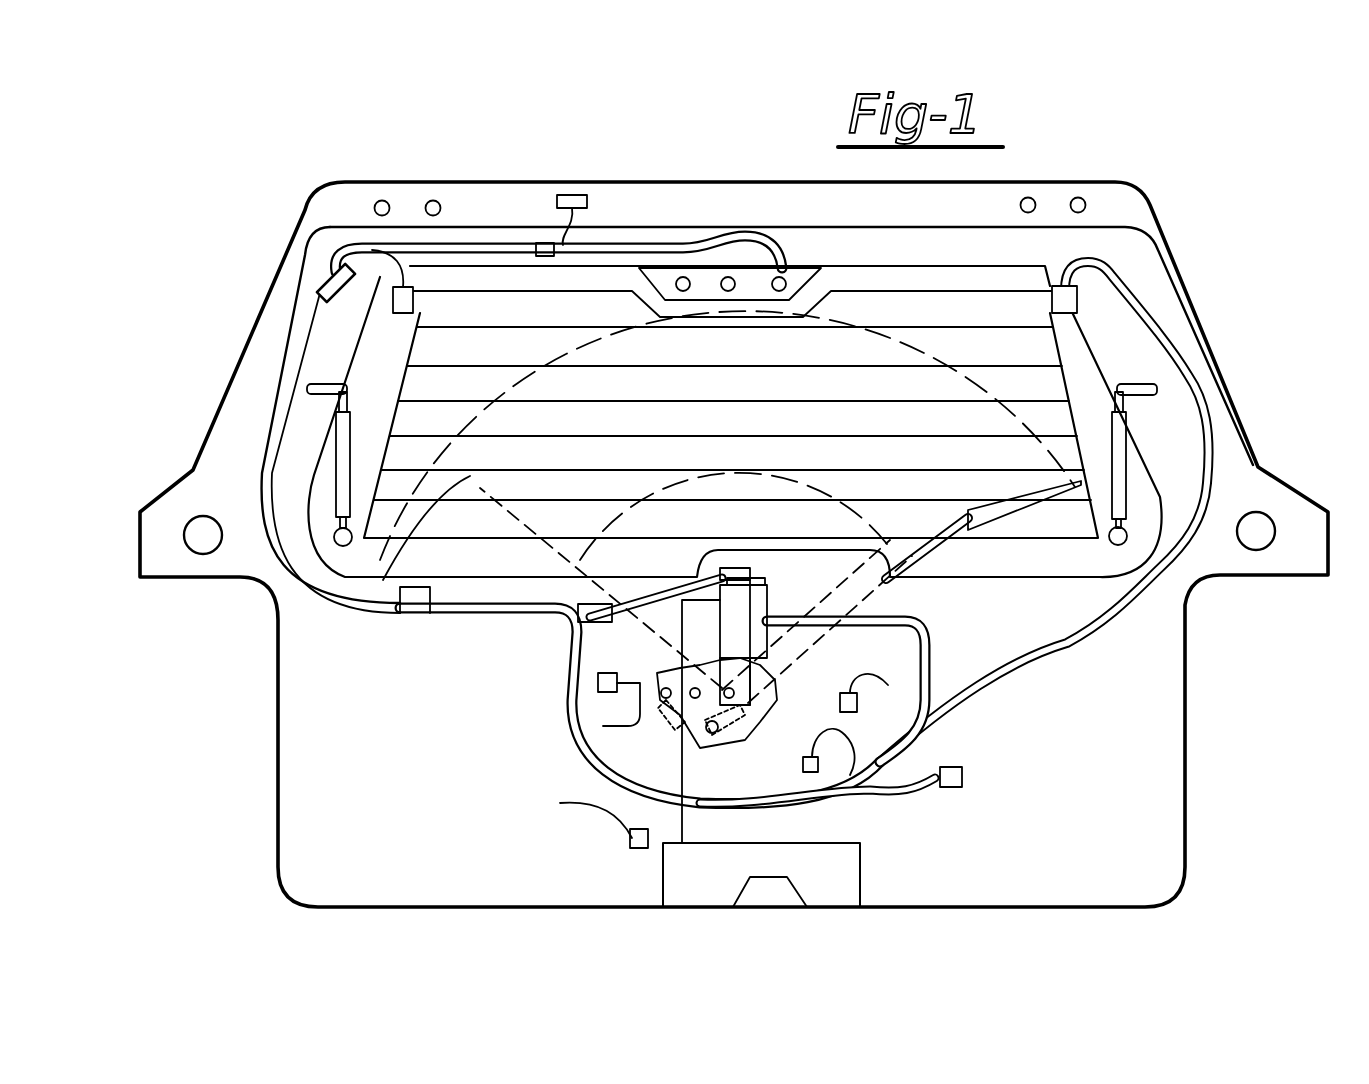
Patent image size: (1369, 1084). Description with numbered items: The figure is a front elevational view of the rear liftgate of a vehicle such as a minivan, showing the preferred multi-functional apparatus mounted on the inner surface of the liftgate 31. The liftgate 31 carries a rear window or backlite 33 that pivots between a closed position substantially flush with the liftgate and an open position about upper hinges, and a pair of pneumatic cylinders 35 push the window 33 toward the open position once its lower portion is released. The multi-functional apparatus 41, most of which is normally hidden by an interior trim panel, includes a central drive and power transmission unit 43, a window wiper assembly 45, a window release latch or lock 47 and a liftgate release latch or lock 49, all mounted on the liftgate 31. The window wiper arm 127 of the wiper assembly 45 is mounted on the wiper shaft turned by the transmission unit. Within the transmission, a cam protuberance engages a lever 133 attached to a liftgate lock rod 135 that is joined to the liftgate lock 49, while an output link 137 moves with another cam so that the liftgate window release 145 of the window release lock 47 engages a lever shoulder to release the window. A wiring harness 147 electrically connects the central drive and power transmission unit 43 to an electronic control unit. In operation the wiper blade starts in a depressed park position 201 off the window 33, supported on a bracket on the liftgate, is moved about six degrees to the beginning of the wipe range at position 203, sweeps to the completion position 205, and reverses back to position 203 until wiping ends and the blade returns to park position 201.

The liftgate 31 is at (369, 876).
The rear window or backlite 33 is at (391, 373).
The pneumatic cylinders 35 is at (337, 443).
The multi-functional apparatus 41 is at (733, 767).
The central drive and power transmission unit 43 is at (652, 650).
The window wiper assembly 45 is at (883, 600).
The window release latch or lock 47 is at (735, 595).
The liftgate release latch or lock 49 is at (680, 890).
The window wiper arm 127 is at (907, 625).
The lever 133 is at (660, 713).
The liftgate lock rod 135 is at (632, 835).
The output link 137 is at (948, 760).
The liftgate window release 145 is at (766, 705).
The wiring harness 147 is at (430, 610).
The depressed park position 201 is at (383, 580).
The beginning of the window wipe range position 203 is at (275, 620).
The completion position 205 is at (1195, 592).